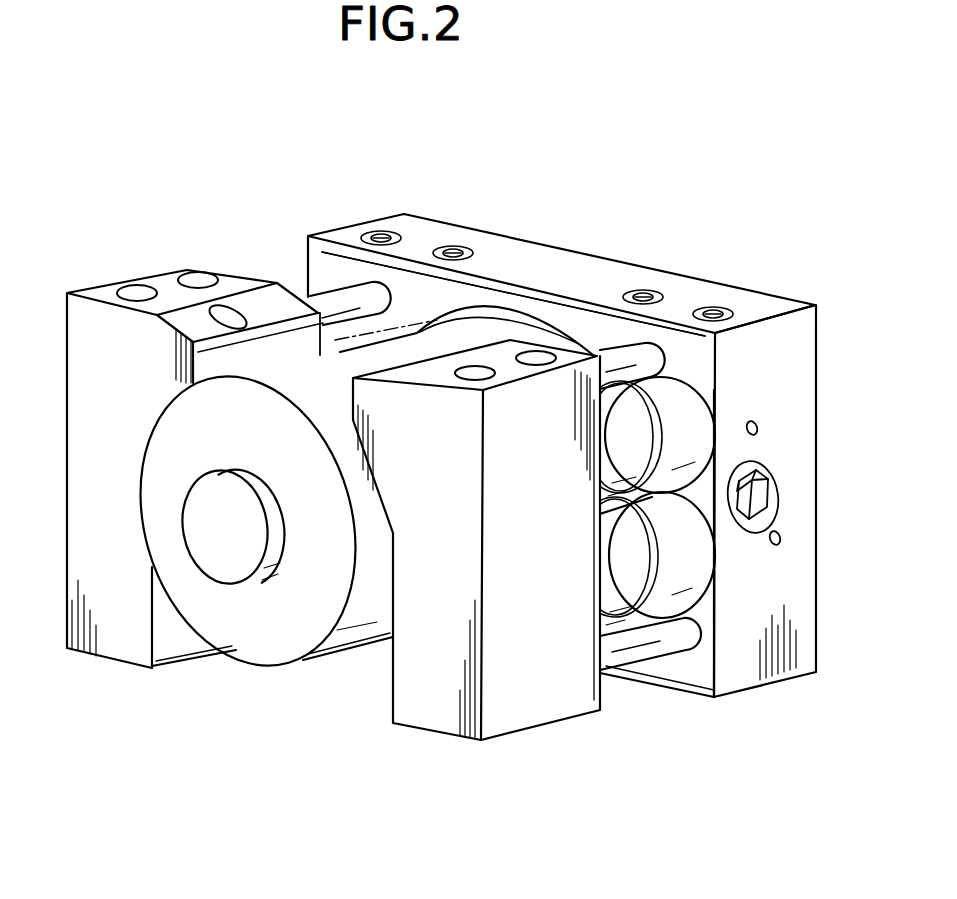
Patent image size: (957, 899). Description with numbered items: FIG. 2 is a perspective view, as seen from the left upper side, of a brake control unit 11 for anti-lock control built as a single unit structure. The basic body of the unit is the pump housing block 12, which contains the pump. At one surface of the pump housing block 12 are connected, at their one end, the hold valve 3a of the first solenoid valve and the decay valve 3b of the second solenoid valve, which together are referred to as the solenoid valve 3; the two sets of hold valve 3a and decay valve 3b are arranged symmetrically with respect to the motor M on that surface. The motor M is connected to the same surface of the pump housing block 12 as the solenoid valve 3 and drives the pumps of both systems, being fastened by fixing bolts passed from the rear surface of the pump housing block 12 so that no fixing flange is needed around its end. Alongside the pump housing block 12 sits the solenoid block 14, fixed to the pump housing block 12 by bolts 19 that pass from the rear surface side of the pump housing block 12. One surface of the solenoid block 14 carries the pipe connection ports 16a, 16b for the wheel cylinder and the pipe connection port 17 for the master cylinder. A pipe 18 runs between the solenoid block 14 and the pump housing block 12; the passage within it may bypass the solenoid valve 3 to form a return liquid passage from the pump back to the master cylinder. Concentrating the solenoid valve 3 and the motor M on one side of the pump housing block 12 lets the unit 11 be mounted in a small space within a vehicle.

The linear actuator assembly 11 is at (633, 214).
The pump housing block 12 is at (787, 367).
The solenoid block 14 is at (112, 637).
The pipe connection port 16a is at (133, 290).
The pipe connection port 16b is at (200, 278).
The pipe connection port 17 is at (225, 315).
The pipe 18 is at (366, 312).
The bolts 19 is at (343, 297).
The solenoid valve 3 is at (758, 781).
The hold valve 3a is at (688, 460).
The decay valve 3b is at (664, 607).
The motor M is at (247, 642).